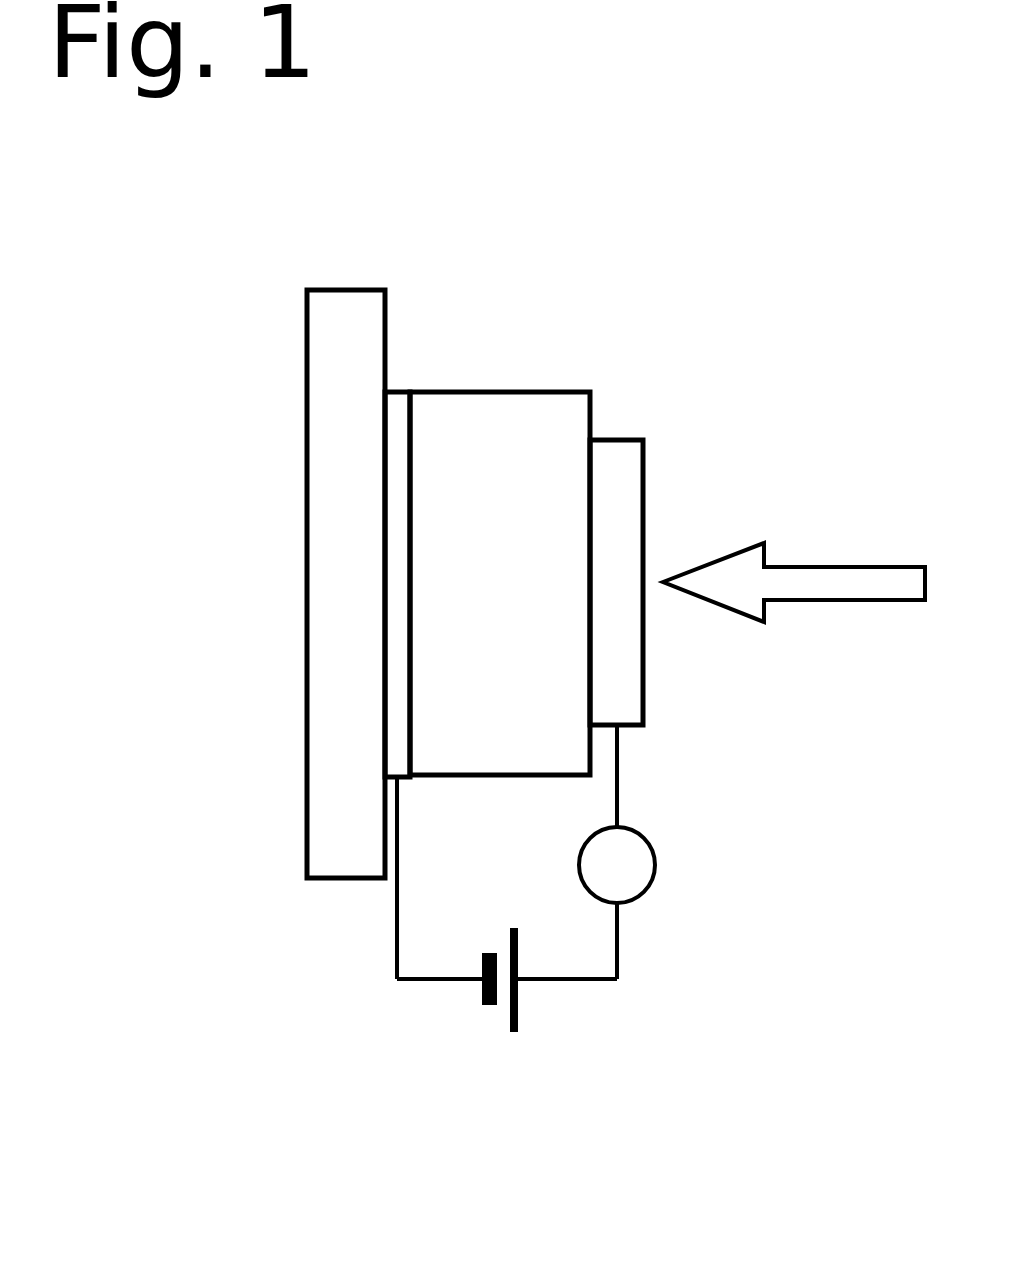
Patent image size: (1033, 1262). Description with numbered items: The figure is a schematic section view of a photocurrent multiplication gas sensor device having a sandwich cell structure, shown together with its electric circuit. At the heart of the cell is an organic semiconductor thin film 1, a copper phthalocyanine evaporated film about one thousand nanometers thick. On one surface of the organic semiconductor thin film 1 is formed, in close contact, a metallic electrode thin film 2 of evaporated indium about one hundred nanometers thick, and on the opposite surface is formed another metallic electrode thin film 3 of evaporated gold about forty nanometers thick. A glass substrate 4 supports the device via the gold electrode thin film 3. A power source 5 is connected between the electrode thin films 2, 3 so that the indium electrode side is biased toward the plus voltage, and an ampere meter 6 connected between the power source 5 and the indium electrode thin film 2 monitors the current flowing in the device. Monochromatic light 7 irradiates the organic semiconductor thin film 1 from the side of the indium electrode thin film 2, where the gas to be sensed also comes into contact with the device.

The organic semiconductor thin film 1 is at (497, 420).
The metallic electrode thin film 2 is at (642, 423).
The another metallic electrode thin film 3 is at (398, 400).
The glass substrate 4 is at (330, 353).
The power source 5 is at (500, 1015).
The ampere meter 6 is at (647, 892).
The monochromatic light 7 is at (835, 505).